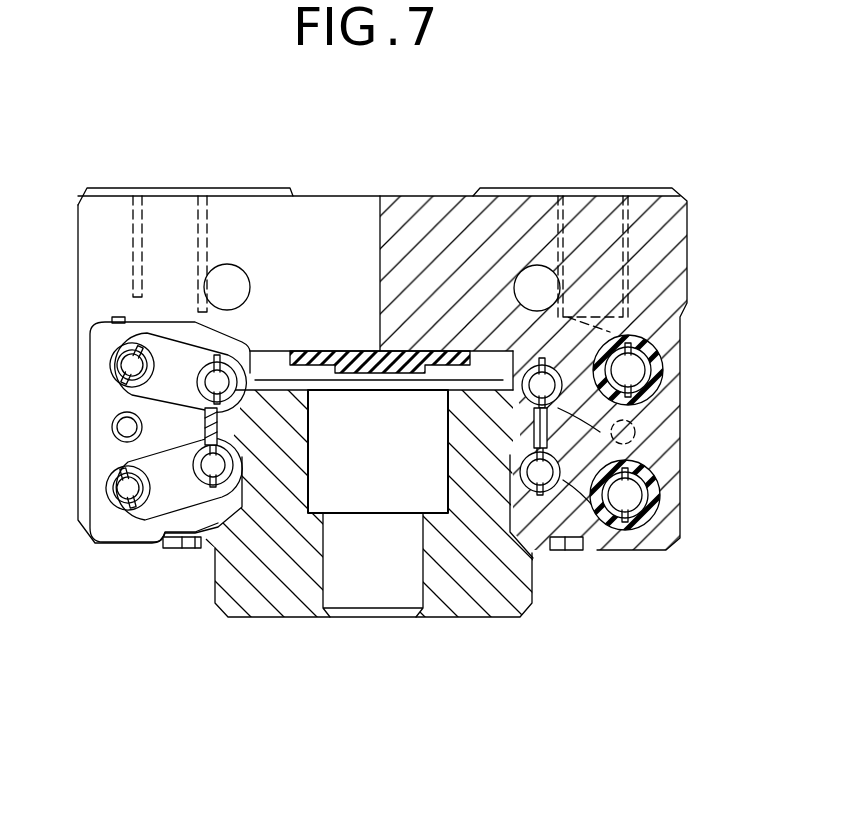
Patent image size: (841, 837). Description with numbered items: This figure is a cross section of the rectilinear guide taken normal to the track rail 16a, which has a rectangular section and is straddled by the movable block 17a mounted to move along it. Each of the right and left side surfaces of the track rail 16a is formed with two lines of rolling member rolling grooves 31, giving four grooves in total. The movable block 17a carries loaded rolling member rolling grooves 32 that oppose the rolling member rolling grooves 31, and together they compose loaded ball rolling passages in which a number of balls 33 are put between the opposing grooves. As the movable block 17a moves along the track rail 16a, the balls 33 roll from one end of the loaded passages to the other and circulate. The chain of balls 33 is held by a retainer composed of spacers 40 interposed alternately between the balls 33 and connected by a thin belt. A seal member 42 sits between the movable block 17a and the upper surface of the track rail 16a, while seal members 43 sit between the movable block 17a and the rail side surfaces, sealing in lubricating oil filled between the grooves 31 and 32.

The movable block 17a is at (360, 205).
The track rail 16a is at (450, 603).
The seal member 42 is at (348, 348).
The spacer 40 is at (122, 368).
The rolling member rolling groove 31 is at (205, 468).
The ball 33 is at (203, 488).
The loaded rolling member rolling groove 32 is at (547, 367).
The seal member 43 is at (170, 550).